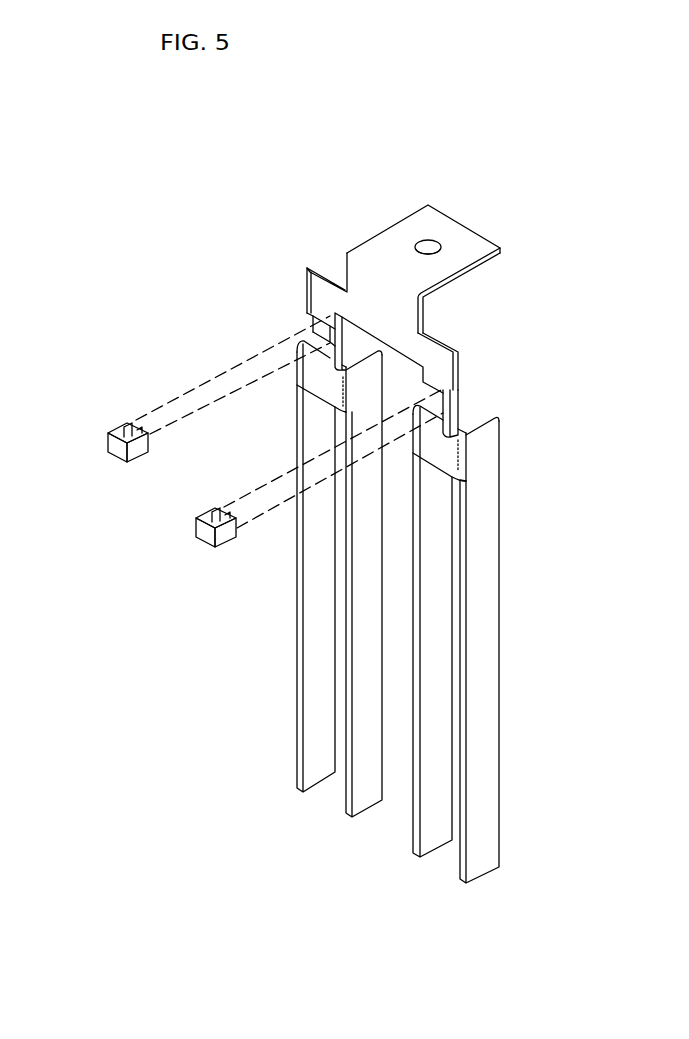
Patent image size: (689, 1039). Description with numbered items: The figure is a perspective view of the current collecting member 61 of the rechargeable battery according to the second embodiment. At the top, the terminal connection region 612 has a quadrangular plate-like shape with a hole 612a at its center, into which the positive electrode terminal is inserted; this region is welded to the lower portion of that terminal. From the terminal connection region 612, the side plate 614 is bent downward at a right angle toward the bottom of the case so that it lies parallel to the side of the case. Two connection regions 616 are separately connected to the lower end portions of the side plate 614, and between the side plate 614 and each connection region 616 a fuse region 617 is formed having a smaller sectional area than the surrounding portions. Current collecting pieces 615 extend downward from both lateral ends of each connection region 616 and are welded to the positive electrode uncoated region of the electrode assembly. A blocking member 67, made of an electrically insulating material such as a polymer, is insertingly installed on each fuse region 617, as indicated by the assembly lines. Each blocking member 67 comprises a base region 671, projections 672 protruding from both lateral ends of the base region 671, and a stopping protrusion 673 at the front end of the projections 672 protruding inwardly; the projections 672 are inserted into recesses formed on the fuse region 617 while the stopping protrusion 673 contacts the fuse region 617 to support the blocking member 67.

The current collecting member 61 is at (366, 216).
The terminal connection region 612 is at (458, 242).
The hole 612a is at (423, 241).
The side plate 614 is at (380, 308).
The current collecting piece 615 is at (318, 768).
The connection region 616 is at (313, 377).
The fuse region 617 is at (312, 323).
The blocking member 67 is at (98, 446).
The base region 671 is at (118, 453).
The projection 672 is at (125, 427).
The stopping protrusion 673 is at (139, 425).